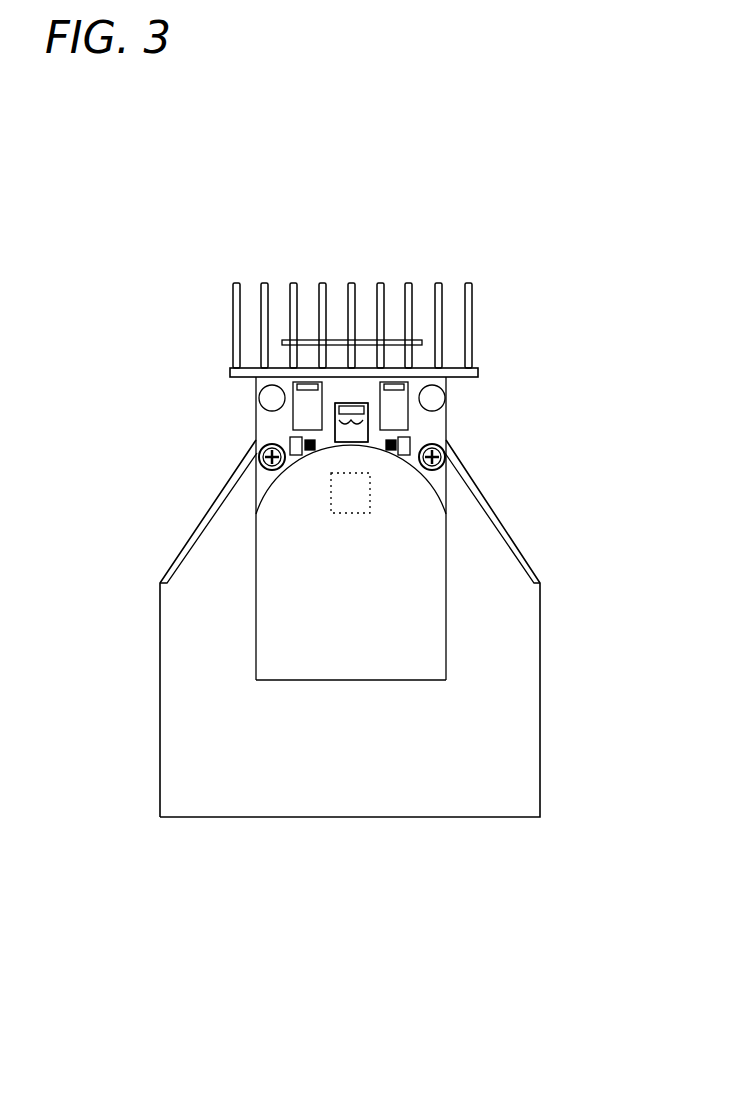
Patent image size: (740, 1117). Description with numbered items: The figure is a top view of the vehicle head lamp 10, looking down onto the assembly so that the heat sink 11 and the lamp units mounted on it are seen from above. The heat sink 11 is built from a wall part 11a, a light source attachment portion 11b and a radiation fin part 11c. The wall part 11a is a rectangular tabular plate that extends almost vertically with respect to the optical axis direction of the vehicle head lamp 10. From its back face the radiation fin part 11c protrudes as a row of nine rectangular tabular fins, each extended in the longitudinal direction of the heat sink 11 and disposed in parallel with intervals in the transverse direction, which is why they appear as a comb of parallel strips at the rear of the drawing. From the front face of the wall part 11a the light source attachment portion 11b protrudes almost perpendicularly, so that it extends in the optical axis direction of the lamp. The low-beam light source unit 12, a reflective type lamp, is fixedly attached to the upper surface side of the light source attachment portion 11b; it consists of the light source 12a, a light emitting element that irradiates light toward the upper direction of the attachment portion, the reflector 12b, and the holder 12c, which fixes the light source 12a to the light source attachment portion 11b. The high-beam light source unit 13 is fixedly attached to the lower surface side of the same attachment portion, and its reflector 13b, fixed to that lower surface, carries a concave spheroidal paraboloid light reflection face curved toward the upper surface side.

The vehicle head lamp 10 is at (613, 219).
The heat sink 11 is at (573, 310).
The wall part 11a is at (471, 377).
The light source attachment portion 11b is at (460, 427).
The radiation fin part 11c is at (473, 321).
The low-beam light source unit 12 is at (460, 882).
The light source 12a is at (348, 513).
The reflector 12b is at (293, 680).
The holder 12c is at (388, 455).
The high-beam light source unit 13 is at (541, 790).
The reflector 13b is at (163, 690).